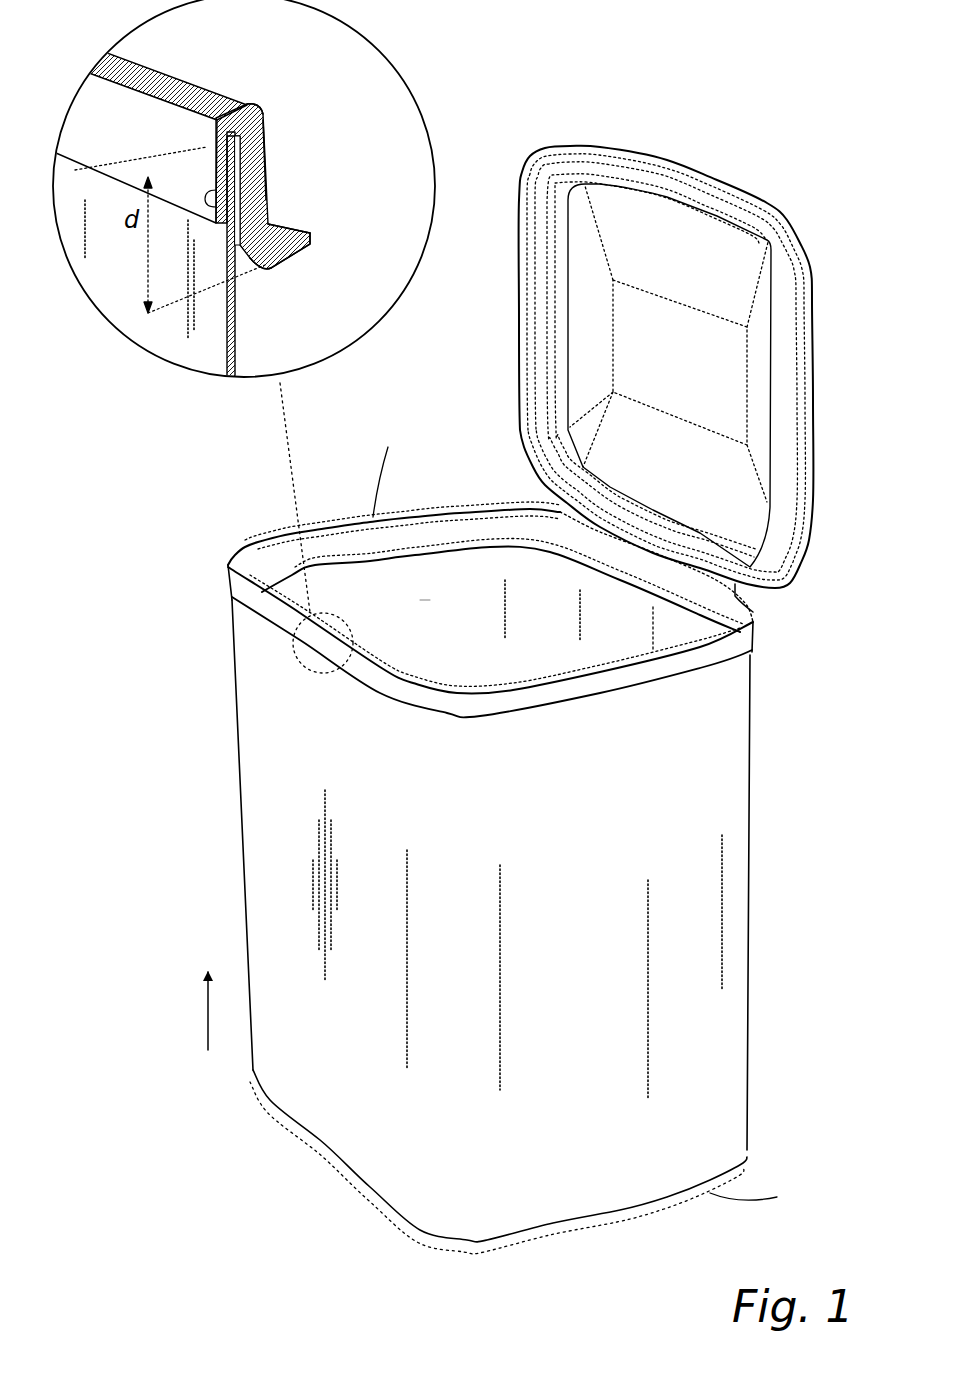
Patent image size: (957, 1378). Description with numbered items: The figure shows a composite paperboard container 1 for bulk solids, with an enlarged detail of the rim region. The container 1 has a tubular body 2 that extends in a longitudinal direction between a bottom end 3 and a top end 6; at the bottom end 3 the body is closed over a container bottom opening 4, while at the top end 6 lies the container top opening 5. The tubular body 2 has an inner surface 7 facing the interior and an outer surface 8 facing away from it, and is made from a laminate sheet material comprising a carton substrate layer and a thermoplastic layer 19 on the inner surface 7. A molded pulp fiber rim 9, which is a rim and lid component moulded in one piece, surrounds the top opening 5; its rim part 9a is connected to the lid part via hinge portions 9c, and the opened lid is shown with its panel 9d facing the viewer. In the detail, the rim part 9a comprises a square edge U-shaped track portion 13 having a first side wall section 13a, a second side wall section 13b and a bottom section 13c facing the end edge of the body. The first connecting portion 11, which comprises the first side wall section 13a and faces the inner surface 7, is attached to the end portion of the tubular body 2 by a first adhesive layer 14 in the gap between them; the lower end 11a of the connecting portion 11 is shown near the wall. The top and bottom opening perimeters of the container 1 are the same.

The composite paperboard container 1 is at (770, 662).
The tubular body 2 is at (702, 920).
The bottom end 3 is at (743, 1172).
The container bottom opening 4 is at (522, 1252).
The container top opening 5 is at (477, 558).
The top end 6 is at (765, 663).
The inner surface 7 is at (423, 573).
The outer surface 8 is at (270, 827).
The rim 9 is at (258, 528).
The rim part 9a is at (357, 527).
The hinge portion 9c is at (792, 582).
The lid panel 9d is at (580, 343).
The first connecting portion 11 is at (270, 193).
The hook tip 11a is at (293, 263).
The square edge U-shaped track portion 13 is at (267, 113).
The first side wall section 13a is at (290, 250).
The second side wall section 13b is at (267, 167).
The bottom section 13c is at (220, 147).
The first adhesive layer 14 is at (267, 143).
The thermoplastic layer 19 is at (240, 293).